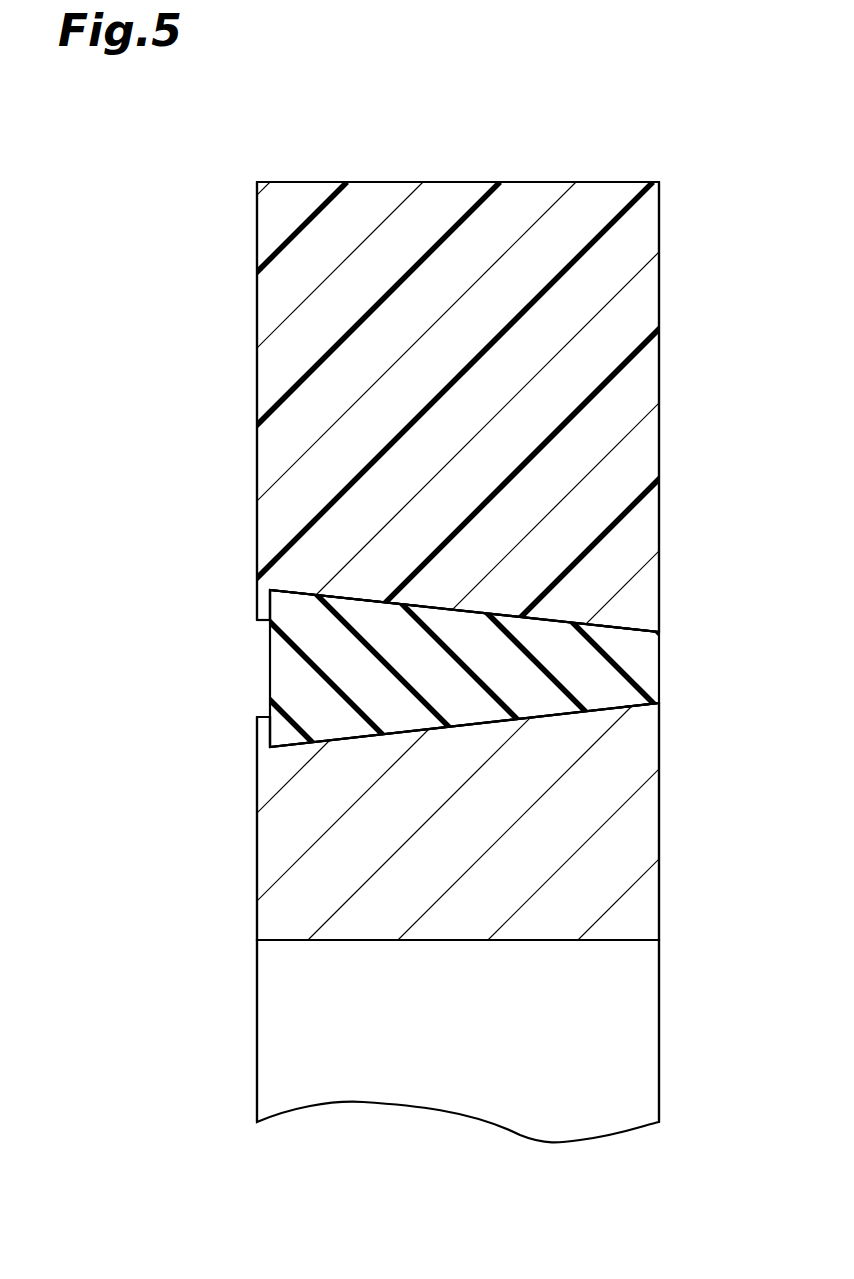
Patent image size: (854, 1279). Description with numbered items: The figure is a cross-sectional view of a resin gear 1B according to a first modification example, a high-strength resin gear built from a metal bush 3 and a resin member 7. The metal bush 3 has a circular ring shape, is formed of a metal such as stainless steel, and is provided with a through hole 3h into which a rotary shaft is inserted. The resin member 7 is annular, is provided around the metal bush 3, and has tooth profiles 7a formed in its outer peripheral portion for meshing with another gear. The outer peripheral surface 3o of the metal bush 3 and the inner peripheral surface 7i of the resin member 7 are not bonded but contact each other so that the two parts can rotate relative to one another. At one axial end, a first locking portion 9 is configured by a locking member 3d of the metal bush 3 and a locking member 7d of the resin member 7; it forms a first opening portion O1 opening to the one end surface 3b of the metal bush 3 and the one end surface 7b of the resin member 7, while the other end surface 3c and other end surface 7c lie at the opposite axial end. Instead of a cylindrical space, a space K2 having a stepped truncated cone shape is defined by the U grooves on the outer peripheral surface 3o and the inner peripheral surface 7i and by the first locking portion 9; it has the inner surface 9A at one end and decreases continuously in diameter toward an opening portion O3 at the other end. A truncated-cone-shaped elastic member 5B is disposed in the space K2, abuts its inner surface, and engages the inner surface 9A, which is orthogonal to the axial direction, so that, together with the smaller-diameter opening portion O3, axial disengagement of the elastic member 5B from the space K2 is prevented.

The resin gear 1B is at (171, 207).
The resin member 7 is at (643, 295).
The tooth profile 7a is at (633, 182).
The one end surface of the resin member 7b is at (257, 383).
The other end surface of the resin member 7c is at (659, 443).
The inner peripheral surface of the resin member 7i is at (290, 590).
The locking member of the resin member 7d is at (270, 600).
The first locking portion 9 is at (165, 585).
The inner surface of the first locking portion 9A is at (275, 587).
The elastic member 5B is at (632, 667).
The space K2 is at (602, 631).
The first opening portion O1 is at (270, 621).
The opening portion O3 is at (659, 703).
The metal bush 3 is at (645, 817).
The one end surface of the metal bush 3b is at (257, 883).
The other end surface of the metal bush 3c is at (659, 903).
The locking member of the metal bush 3d is at (264, 734).
The outer peripheral surface of the metal bush 3o is at (355, 742).
The through hole 3h is at (590, 1053).